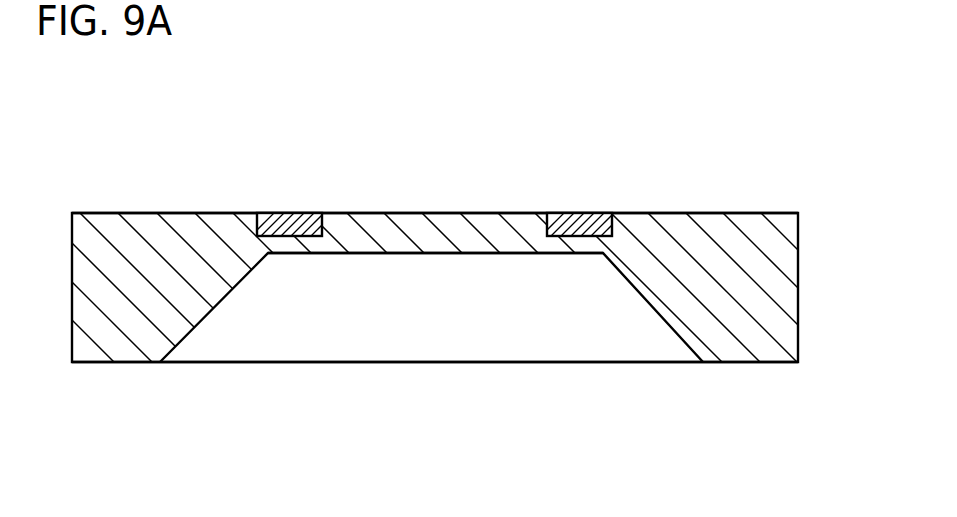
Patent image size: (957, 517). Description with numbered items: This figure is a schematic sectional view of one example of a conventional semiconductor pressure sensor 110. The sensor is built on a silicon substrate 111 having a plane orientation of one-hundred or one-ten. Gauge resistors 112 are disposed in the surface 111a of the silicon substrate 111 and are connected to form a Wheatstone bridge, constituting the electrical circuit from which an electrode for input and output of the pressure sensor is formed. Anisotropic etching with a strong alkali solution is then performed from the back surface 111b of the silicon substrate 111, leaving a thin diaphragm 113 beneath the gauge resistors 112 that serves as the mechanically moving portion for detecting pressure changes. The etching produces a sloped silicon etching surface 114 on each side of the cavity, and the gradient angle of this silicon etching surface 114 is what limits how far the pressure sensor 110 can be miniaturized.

The semiconductor pressure sensor 110 is at (779, 99).
The silicon substrate 111 is at (760, 242).
The surface of silicon substrate 111a is at (678, 215).
The back surface of silicon substrate 111b is at (688, 363).
The gauge resistors 112 is at (291, 218).
The diaphragm 113 is at (470, 218).
The silicon etching surface 114 is at (505, 340).